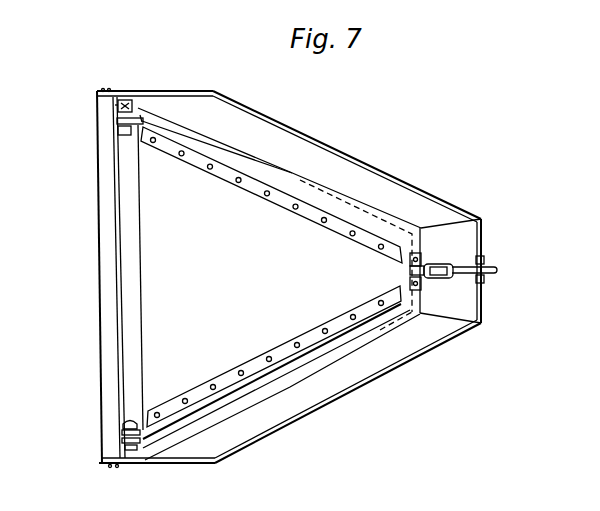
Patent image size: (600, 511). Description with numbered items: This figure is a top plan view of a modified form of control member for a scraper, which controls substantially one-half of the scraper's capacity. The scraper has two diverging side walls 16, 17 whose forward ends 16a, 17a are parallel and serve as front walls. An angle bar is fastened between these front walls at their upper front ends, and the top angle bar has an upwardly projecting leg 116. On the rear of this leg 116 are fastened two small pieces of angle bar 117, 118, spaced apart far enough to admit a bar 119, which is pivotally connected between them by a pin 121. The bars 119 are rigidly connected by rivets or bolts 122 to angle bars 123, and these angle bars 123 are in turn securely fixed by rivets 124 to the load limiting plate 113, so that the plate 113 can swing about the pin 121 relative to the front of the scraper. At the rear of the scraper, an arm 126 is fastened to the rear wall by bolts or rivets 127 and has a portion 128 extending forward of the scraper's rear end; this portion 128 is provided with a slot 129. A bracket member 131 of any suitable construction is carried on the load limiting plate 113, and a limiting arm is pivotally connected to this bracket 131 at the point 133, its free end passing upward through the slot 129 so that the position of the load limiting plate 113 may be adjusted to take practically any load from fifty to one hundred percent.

The side wall 16 is at (317, 137).
The forward end of side wall 16a is at (194, 92).
The side wall 17 is at (310, 411).
The forward end of side wall 17a is at (176, 464).
The load limiting plate 113 is at (275, 286).
The upwardly projecting leg 116 is at (112, 266).
The angle bar piece 117 is at (110, 153).
The angle bar piece 118 is at (130, 100).
The bar 119 is at (142, 118).
The pin 121 is at (122, 418).
The rivets or bolts 122 is at (167, 130).
The angle bar 123 is at (281, 206).
The rivets 124 is at (326, 238).
The arm 126 is at (499, 270).
The bolts or rivets 127 is at (484, 258).
The forward extending portion 128 is at (466, 279).
The slot 129 is at (445, 267).
The bracket member 131 is at (424, 232).
The pivot point 133 is at (409, 272).